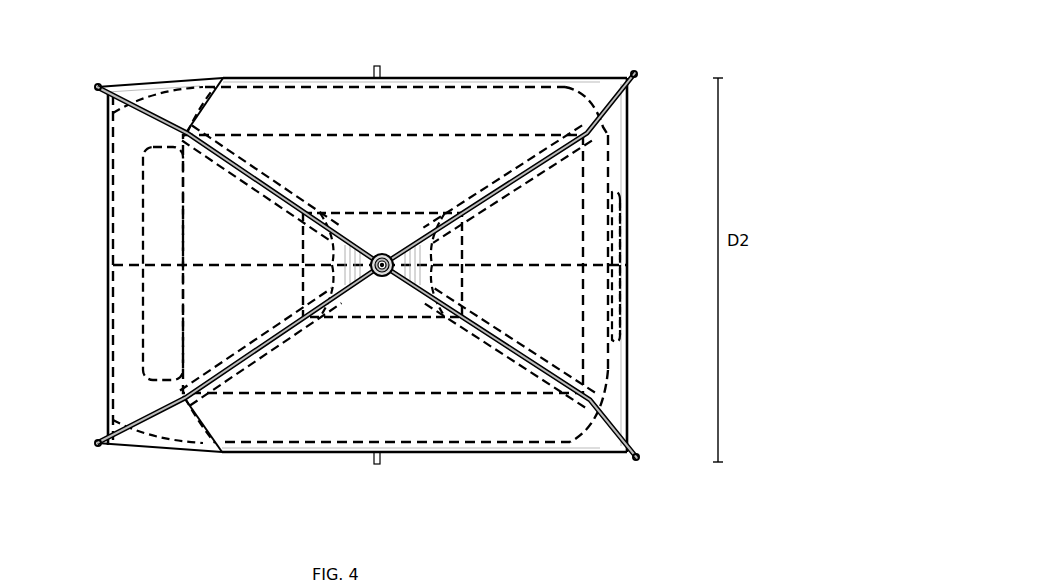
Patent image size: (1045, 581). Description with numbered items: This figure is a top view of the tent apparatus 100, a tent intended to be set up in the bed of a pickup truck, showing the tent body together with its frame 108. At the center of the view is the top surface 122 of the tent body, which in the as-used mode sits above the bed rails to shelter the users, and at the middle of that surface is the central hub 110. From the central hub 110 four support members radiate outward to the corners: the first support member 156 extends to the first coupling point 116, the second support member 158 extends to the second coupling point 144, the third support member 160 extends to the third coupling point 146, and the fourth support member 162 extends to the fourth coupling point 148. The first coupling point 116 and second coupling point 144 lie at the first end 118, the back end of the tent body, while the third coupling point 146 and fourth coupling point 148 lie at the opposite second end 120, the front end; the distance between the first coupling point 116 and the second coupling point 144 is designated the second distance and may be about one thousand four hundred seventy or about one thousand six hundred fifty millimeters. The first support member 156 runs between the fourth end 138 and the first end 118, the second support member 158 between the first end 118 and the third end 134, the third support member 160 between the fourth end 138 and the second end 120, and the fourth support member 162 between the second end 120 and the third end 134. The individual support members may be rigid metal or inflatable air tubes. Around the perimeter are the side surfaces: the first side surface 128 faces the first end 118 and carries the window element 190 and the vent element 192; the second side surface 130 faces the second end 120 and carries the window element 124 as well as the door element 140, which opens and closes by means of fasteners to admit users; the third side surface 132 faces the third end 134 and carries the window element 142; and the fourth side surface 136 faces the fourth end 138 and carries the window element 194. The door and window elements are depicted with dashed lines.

The tent apparatus 100 is at (765, 95).
The frame 108 is at (153, 415).
The central hub 110 is at (383, 268).
The first coupling point 116 is at (637, 73).
The first end 118 is at (628, 365).
The second end 120 is at (108, 338).
The top surface 122 is at (400, 232).
The window element 124 is at (142, 236).
The first side surface 128 is at (620, 127).
The second side surface 130 is at (112, 107).
The third side surface 132 is at (600, 447).
The third end 134 is at (327, 453).
The fourth side surface 136 is at (593, 85).
The fourth end 138 is at (313, 78).
The door element 140 is at (112, 183).
The window element 142 is at (447, 443).
The second coupling point 144 is at (638, 458).
The third coupling point 146 is at (97, 85).
The fourth coupling point 148 is at (95, 447).
The first support member 156 is at (530, 177).
The second support member 158 is at (503, 337).
The third support member 160 is at (267, 185).
The fourth support member 162 is at (288, 330).
The window element 190 is at (612, 163).
The vent element 192 is at (623, 303).
The window element 194 is at (487, 85).